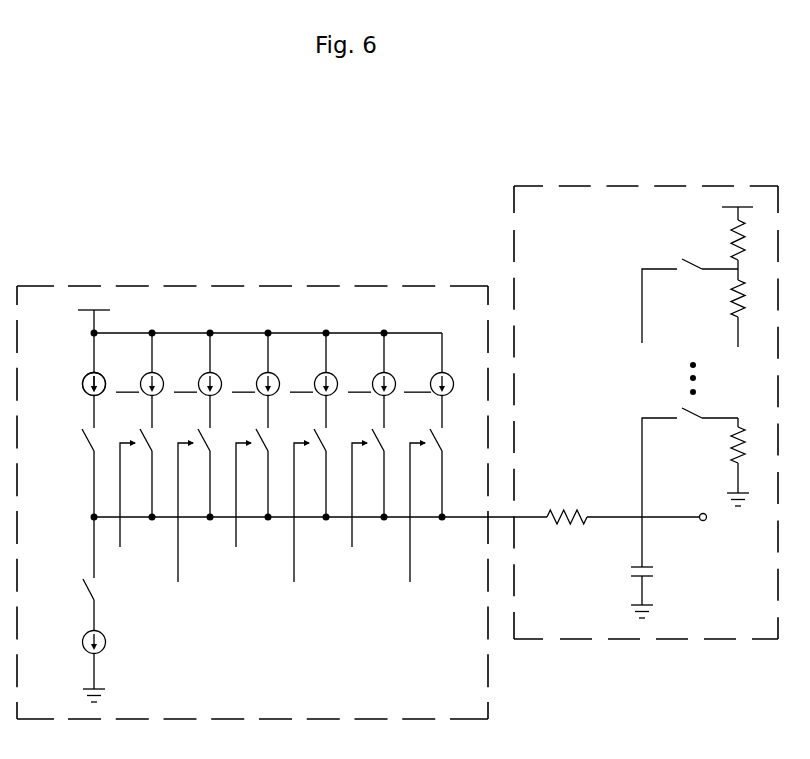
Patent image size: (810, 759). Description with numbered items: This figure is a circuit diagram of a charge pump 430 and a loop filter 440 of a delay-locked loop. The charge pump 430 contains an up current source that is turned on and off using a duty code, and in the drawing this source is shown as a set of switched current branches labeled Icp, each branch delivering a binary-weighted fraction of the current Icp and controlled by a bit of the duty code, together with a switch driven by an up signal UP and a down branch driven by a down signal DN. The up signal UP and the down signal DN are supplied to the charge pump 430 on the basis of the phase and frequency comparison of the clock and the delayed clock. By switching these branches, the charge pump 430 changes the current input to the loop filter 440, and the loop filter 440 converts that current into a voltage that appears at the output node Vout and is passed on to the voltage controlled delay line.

The charge pump 430 is at (134, 286).
The loop filter 440 is at (514, 243).
The up signal UP is at (74, 443).
The down signal DN is at (74, 591).
The charge pump current source Icp is at (84, 383).
The output voltage node Vout is at (709, 532).